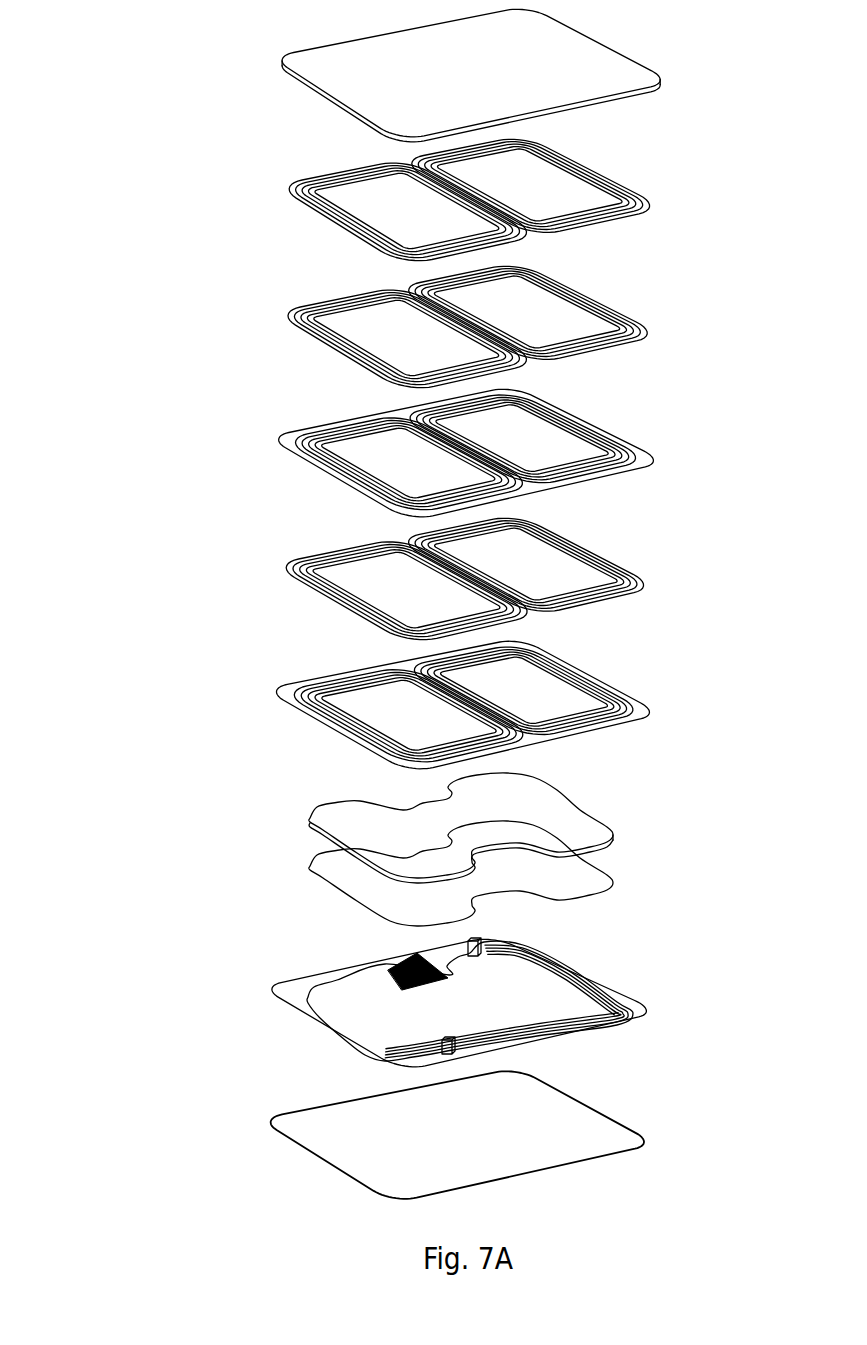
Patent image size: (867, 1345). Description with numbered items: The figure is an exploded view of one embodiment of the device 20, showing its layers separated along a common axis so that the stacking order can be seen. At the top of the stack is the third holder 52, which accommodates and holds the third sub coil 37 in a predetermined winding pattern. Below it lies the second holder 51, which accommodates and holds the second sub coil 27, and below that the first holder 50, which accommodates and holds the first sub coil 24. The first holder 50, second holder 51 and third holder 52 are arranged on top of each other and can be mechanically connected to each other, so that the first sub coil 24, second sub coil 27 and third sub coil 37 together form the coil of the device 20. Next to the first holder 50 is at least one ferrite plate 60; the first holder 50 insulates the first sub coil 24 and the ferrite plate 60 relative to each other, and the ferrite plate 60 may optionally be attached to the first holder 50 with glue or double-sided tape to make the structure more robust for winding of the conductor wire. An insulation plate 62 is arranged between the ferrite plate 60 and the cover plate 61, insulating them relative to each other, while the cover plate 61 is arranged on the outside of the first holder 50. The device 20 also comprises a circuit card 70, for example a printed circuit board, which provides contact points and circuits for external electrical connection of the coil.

The device 20 is at (127, 253).
The third holder 52 is at (507, 75).
The third sub coil 37 is at (511, 199).
The second sub coil 27 is at (510, 326).
The second holder 51 is at (506, 453).
The first sub coil 24 is at (507, 578).
The first holder 50 is at (503, 705).
The ferrite plate 60 is at (503, 828).
The insulation plate 62 is at (503, 873).
The circuit card 70 is at (500, 1002).
The cover plate 61 is at (498, 1135).